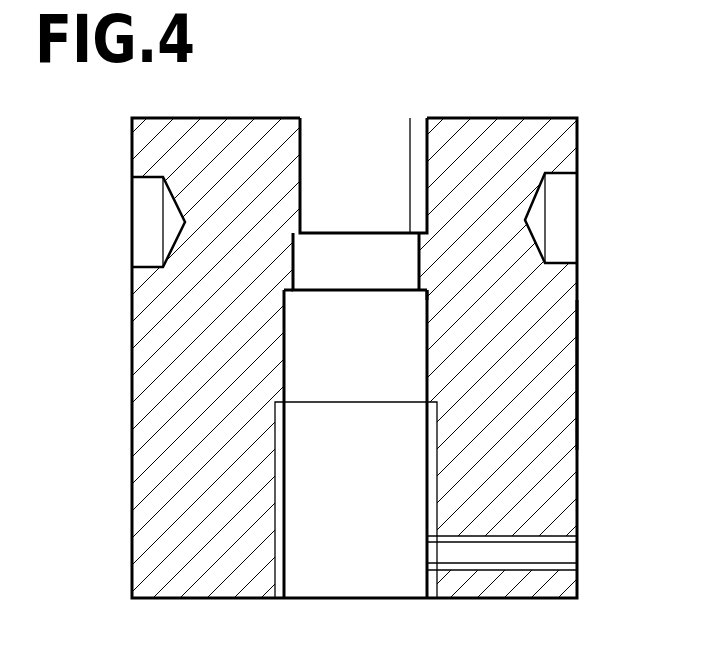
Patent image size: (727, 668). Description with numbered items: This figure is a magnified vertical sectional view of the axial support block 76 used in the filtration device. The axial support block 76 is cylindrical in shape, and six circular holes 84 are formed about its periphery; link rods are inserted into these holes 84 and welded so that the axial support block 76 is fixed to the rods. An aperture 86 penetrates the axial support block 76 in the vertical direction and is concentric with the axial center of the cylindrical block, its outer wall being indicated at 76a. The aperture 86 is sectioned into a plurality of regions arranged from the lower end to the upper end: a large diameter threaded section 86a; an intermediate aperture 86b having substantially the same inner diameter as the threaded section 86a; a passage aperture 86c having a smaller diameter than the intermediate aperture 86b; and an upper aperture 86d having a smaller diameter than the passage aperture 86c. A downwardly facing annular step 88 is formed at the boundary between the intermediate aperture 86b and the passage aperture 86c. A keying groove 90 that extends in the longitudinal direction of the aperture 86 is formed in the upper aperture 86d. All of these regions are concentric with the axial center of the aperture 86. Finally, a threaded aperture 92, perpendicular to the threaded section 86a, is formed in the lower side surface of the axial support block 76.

The axial support block 76 is at (493, 109).
The outer wall of valve body 76a is at (580, 378).
The circular holes 84 is at (563, 263).
The aperture 86 is at (361, 346).
The large diameter threaded section 86a is at (285, 480).
The intermediate aperture 86b is at (285, 358).
The passage aperture 86c is at (293, 277).
The upper aperture 86d is at (300, 190).
The downwardly facing annular step 88 is at (425, 296).
The keying groove 90 is at (425, 158).
The threaded aperture 92 is at (495, 553).